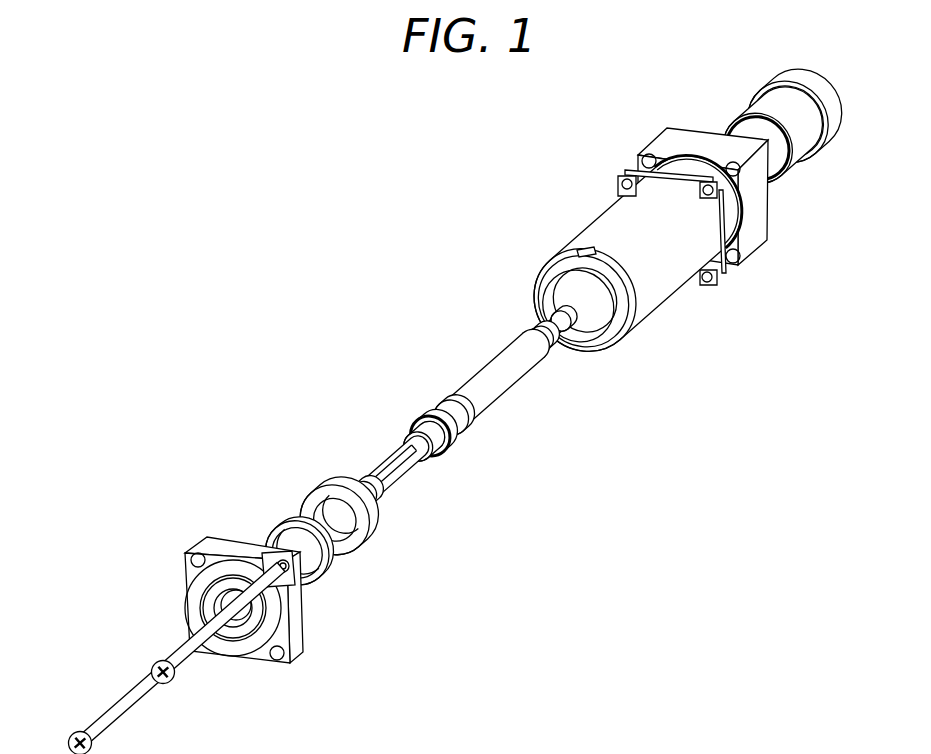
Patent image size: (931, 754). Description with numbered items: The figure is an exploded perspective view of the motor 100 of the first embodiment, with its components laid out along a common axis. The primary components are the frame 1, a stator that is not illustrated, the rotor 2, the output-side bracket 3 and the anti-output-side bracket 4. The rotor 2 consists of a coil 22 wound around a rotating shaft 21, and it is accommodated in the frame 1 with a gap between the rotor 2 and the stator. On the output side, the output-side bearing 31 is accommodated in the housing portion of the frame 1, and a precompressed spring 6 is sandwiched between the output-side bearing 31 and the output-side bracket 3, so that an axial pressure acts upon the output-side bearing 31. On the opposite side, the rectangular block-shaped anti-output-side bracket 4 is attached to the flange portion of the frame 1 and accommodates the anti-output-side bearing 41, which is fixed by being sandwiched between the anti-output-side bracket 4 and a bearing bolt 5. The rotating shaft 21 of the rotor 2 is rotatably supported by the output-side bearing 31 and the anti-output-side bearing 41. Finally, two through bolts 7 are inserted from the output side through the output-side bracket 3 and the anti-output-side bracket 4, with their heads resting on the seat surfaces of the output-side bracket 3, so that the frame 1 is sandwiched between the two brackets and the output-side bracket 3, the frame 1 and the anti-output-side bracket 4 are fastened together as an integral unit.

The motor 100 is at (464, 396).
The frame 1 is at (589, 212).
The rotor 2 is at (452, 402).
The rotating shaft 21 is at (392, 458).
The coil 22 is at (468, 386).
The output-side bracket 3 is at (183, 577).
The output-side bearing 31 is at (312, 492).
The anti-output-side bracket 4 is at (659, 137).
The anti-output-side bearing 41 is at (742, 118).
The bearing bolt 5 is at (776, 90).
The precompressed spring 6 is at (273, 521).
The through bolts 7 is at (182, 655).